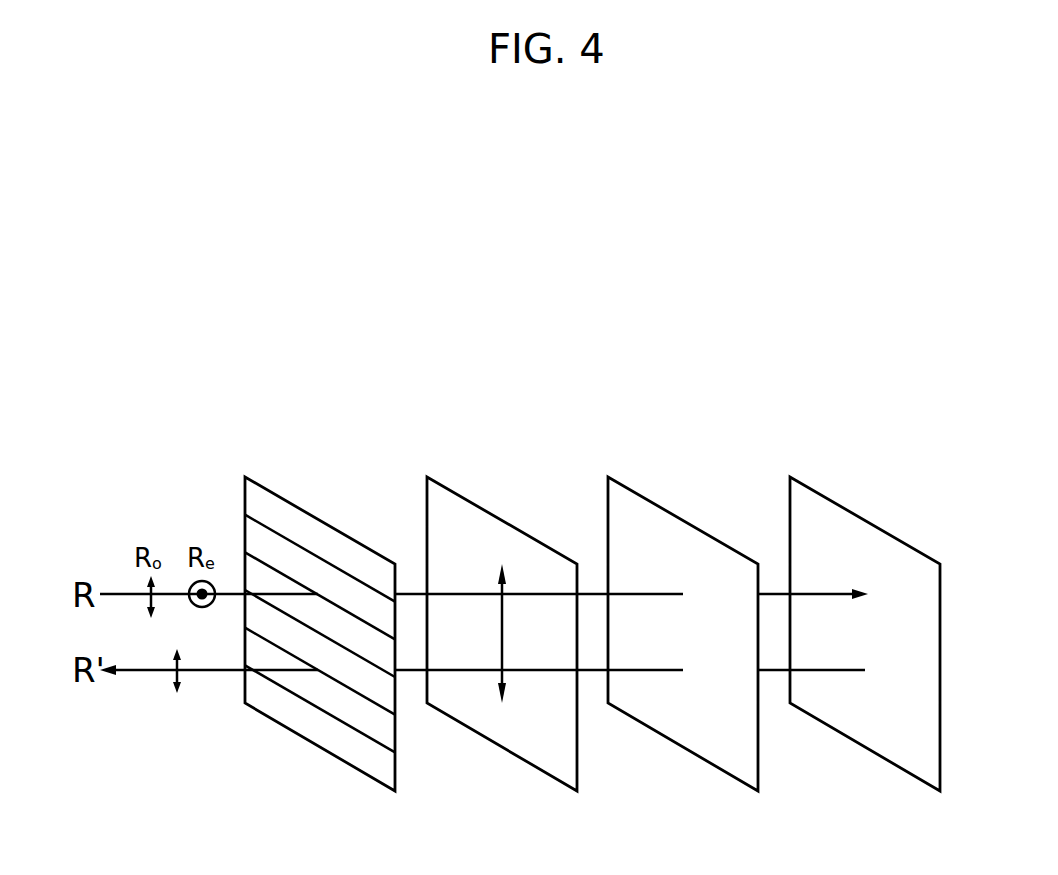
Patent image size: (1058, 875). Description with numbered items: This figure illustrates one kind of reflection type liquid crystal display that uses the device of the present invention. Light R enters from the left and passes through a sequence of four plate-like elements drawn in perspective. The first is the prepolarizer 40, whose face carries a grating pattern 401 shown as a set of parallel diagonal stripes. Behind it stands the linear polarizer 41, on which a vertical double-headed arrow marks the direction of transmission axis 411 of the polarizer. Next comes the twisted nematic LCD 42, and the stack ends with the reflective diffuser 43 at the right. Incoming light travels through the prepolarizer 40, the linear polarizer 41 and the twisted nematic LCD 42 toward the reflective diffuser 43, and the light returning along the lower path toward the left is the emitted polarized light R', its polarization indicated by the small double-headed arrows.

The prepolarizer 40 is at (320, 627).
The grating pattern 401 is at (313, 705).
The linear polarizer 41 is at (502, 613).
The direction of transmission axis 411 is at (500, 660).
The twisted nematic LCD 42 is at (690, 522).
The reflective diffuser 43 is at (872, 522).